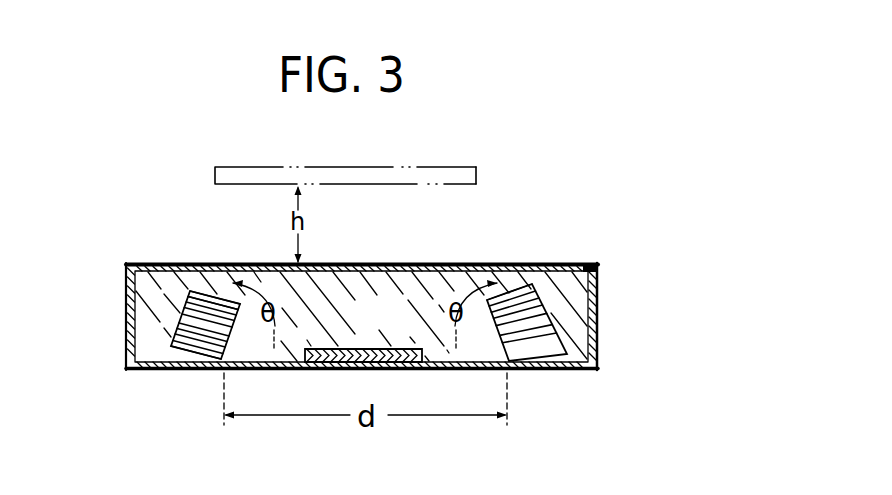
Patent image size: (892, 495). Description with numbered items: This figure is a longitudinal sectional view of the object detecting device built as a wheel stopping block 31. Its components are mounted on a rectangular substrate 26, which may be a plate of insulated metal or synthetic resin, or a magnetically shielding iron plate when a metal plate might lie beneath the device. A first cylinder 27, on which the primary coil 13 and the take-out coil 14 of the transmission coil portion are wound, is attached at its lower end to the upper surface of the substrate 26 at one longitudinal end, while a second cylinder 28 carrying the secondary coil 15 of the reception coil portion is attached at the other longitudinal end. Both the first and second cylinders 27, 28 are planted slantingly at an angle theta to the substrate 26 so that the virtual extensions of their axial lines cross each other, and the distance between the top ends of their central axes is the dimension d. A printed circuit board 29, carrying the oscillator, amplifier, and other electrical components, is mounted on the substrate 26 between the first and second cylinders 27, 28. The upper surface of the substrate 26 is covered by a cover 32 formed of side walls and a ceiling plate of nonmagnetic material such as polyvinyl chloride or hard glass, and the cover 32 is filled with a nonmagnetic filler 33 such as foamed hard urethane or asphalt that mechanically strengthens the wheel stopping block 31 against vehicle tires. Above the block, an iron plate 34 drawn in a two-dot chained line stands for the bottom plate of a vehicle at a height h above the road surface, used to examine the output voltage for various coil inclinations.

The primary coil 13 is at (198, 298).
The take-out coil 14 is at (175, 325).
The secondary coil 15 is at (549, 310).
The substrate 26 is at (185, 352).
The first cylinder 27 is at (211, 294).
The second cylinder 28 is at (520, 290).
The printed circuit board 29 is at (385, 348).
The wheel stopping block 31 is at (372, 263).
The cover 32 is at (600, 263).
The filler 33 is at (428, 289).
The iron plate 34 is at (476, 183).